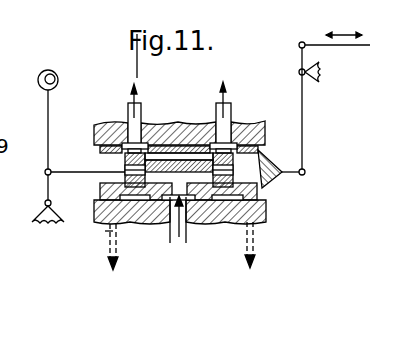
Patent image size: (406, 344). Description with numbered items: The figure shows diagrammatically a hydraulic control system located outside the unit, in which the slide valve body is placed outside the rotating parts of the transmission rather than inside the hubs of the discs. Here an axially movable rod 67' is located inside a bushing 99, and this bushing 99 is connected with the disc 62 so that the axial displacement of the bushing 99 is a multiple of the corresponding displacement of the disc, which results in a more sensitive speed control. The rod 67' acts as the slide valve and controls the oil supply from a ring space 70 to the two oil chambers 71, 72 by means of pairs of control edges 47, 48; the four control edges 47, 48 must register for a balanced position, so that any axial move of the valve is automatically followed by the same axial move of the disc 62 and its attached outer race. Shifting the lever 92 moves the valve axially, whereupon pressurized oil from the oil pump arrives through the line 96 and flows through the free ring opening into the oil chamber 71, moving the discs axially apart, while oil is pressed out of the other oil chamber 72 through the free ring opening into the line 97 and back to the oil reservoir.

The control edges 47 is at (112, 124).
The control edges 48 is at (124, 163).
The disc 62 is at (354, 50).
The axially movable rod 67' is at (180, 209).
The ring space 70 is at (177, 126).
The oil chamber 71 is at (229, 100).
The oil chamber 72 is at (125, 107).
The lever 92 is at (48, 69).
The line 96 is at (187, 232).
The line 97 is at (104, 236).
The bushing 99 is at (256, 152).